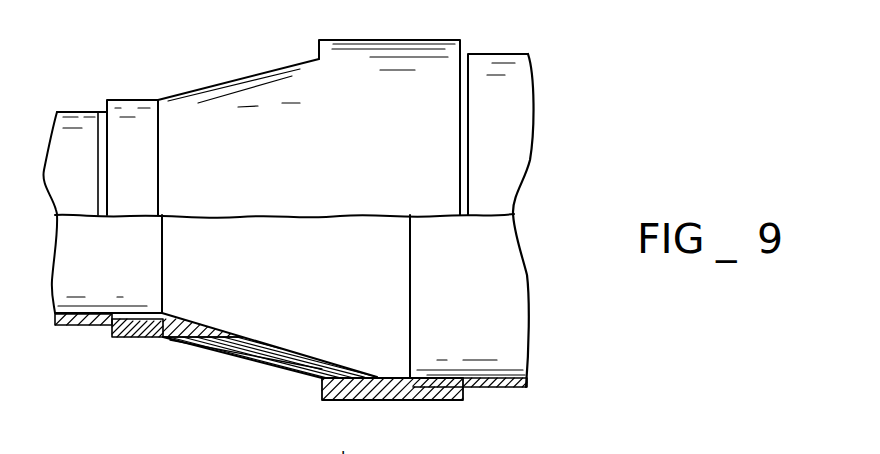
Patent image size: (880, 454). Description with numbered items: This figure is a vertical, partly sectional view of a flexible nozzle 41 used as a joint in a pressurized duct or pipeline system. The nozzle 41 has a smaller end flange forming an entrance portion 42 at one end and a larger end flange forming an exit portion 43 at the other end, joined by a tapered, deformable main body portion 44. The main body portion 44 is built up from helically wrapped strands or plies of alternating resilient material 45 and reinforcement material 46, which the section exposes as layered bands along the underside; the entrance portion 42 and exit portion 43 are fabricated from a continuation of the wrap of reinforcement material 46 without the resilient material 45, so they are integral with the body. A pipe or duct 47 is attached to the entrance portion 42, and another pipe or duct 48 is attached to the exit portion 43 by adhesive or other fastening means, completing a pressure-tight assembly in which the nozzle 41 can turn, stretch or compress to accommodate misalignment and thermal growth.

The nozzle 41 is at (283, 68).
The entrance portion 42 is at (140, 340).
The exit portion 43 is at (353, 402).
The main body portion 44 is at (212, 86).
The resilient material 45 is at (290, 372).
The reinforcement material 46 is at (217, 353).
The pipe or duct 47 is at (73, 328).
The pipe or duct 48 is at (507, 390).